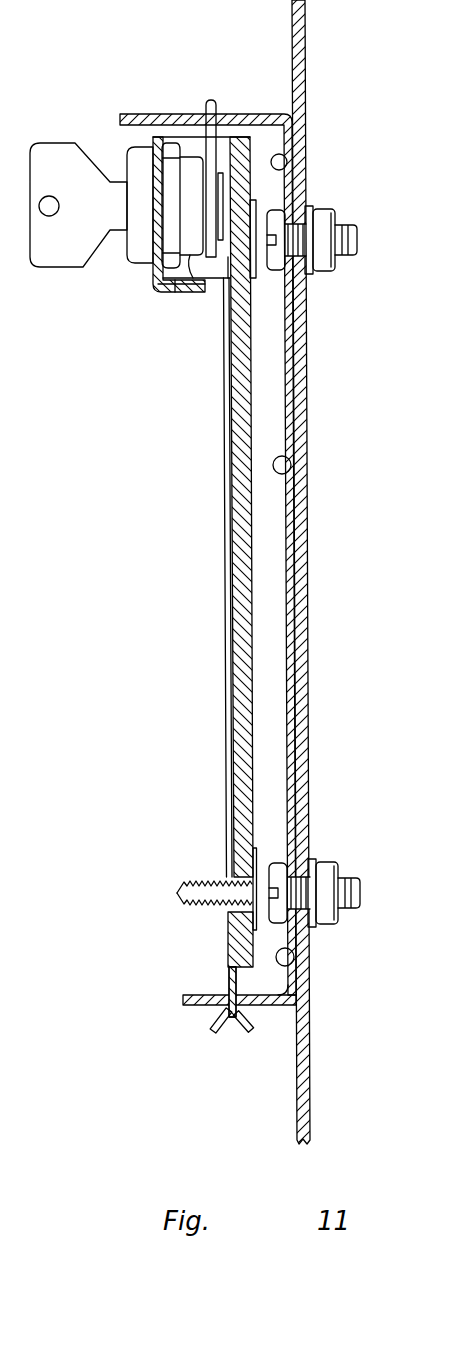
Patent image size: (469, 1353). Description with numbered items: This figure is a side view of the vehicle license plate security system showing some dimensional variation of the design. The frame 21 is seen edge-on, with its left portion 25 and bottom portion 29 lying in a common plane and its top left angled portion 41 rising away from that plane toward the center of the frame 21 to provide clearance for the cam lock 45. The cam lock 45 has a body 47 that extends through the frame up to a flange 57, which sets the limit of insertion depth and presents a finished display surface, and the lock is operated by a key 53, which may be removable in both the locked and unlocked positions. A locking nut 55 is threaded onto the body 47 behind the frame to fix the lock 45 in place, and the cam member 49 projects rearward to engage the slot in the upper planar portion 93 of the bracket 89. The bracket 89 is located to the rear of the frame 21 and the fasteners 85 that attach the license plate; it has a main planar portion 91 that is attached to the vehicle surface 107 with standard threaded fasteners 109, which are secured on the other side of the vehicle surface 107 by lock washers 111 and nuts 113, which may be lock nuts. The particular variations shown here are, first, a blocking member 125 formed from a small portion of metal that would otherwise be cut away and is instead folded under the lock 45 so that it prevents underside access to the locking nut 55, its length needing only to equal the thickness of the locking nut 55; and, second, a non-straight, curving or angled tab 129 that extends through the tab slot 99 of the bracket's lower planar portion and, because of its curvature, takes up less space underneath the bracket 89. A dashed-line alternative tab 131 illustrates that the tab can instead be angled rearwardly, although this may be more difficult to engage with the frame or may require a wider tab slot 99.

The frame 21 is at (205, 953).
The left portion 25 is at (223, 448).
The bottom portion 29 is at (236, 510).
The top left angled portion 41 is at (225, 155).
The cam lock 45 is at (110, 130).
The body 47 is at (192, 262).
The cam member 49 is at (209, 99).
The key 53 is at (57, 273).
The locking nut 55 is at (165, 292).
The flange 57 is at (130, 267).
The fasteners 85 is at (180, 888).
The bracket 89 is at (288, 169).
The main planar portion 91 is at (291, 468).
The upper planar portion 93 is at (258, 114).
The tab slot 99 is at (268, 1008).
The vehicle surface 107 is at (307, 88).
The threaded fasteners 109 is at (358, 240).
The lock washers 111 is at (308, 273).
The nuts 113 is at (313, 207).
The blocking member 125 is at (181, 292).
The tab 129 is at (212, 1026).
The tab 131 is at (238, 1032).